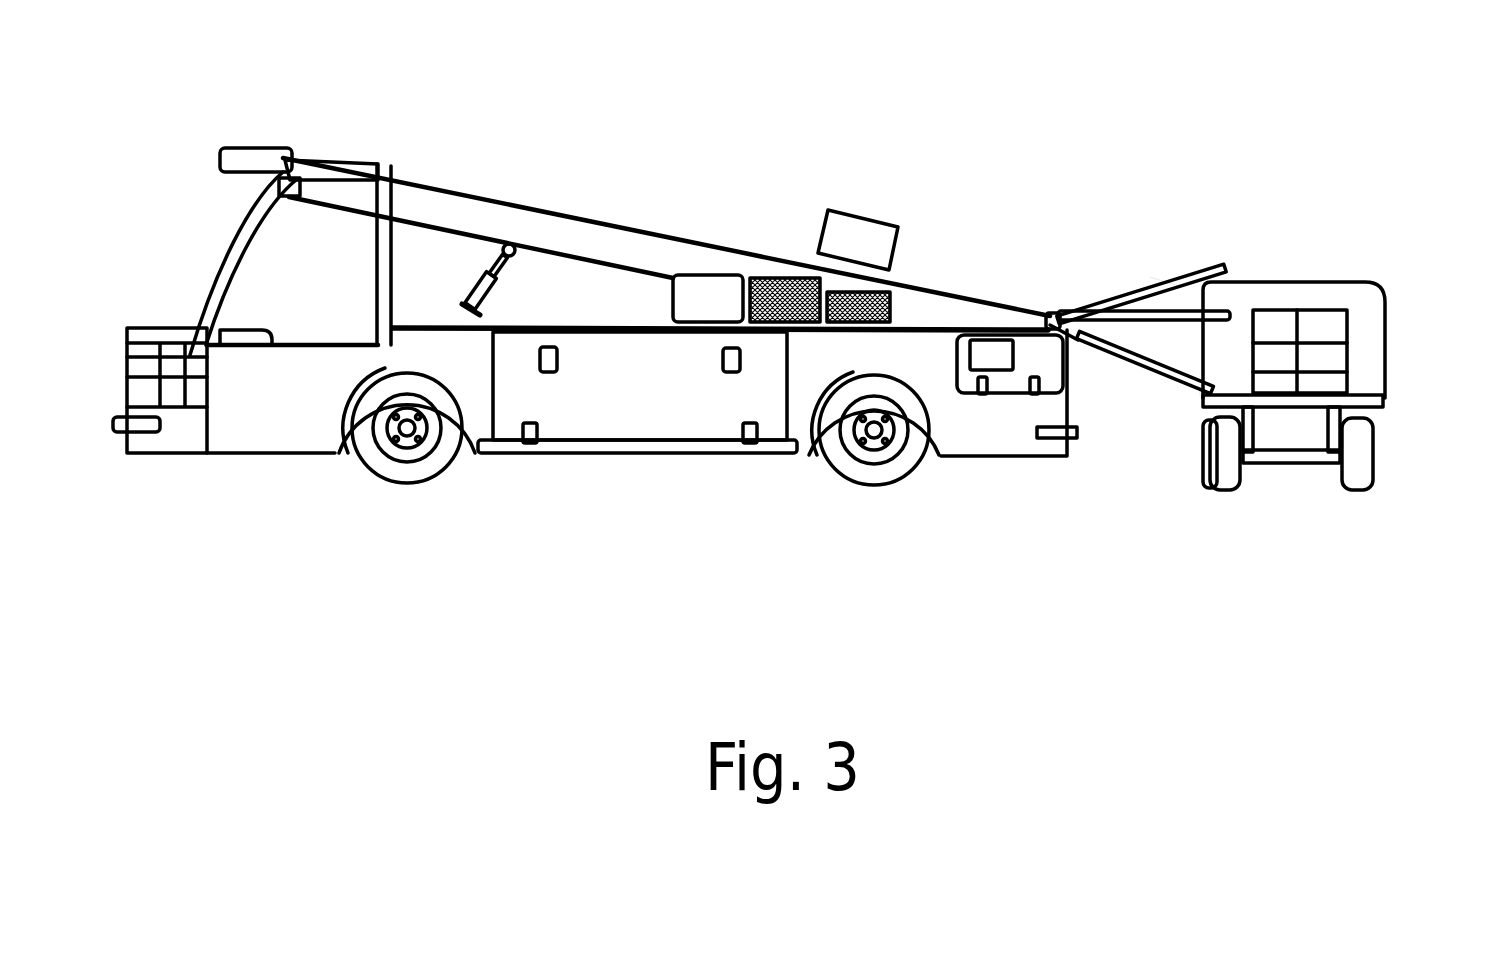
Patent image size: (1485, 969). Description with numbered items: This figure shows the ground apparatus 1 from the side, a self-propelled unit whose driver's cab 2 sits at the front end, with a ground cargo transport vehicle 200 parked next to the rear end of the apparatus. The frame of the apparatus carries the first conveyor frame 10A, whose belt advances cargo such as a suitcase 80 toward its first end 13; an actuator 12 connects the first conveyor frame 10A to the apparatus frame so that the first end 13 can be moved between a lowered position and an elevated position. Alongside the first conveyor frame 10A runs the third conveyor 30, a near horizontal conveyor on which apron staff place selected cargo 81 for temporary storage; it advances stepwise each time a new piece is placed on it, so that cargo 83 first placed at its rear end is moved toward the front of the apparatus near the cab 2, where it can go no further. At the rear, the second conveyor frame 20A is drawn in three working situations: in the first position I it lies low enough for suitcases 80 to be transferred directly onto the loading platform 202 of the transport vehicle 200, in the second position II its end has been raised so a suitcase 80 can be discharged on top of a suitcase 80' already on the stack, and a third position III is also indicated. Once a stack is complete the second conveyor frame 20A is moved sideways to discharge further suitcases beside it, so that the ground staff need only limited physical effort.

The ground apparatus 1 is at (671, 334).
The driver's cab 2 is at (272, 268).
The first end 13 is at (263, 148).
The actuator 12 is at (487, 300).
The first conveyor frame 10A is at (515, 212).
The third conveyor 30 is at (569, 315).
The suitcase 80 is at (881, 205).
The cargo 83 is at (700, 313).
The cargo 81 is at (848, 328).
The second conveyor frame 20A is at (1117, 295).
The first position I is at (1147, 365).
The second position II is at (1160, 277).
The vertical pivot axis III is at (1198, 385).
The ground cargo transport vehicle 200 is at (1331, 345).
The loading platform 202 is at (1362, 386).
The suitcase 80' is at (1300, 296).